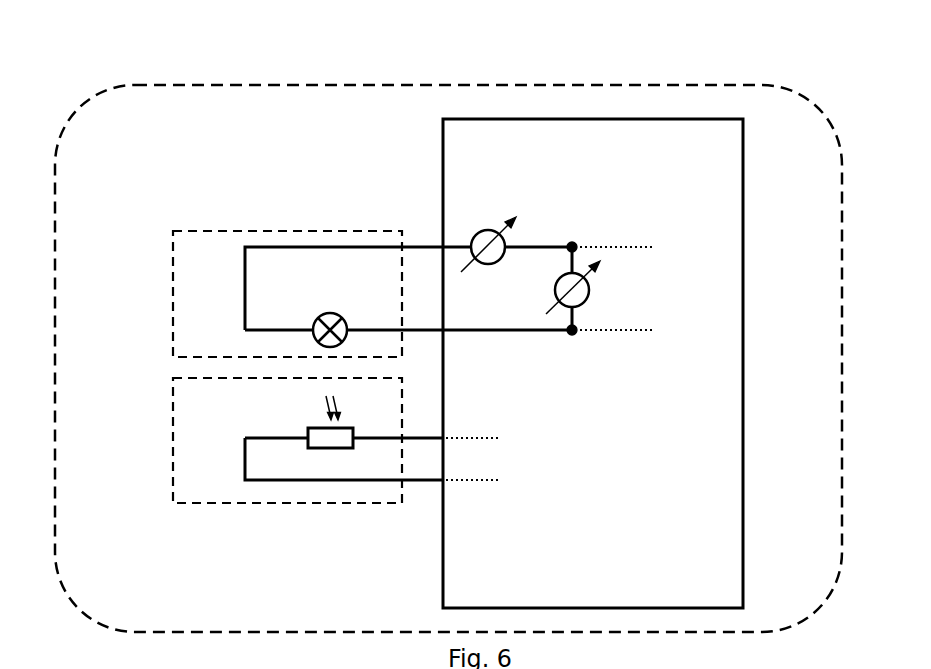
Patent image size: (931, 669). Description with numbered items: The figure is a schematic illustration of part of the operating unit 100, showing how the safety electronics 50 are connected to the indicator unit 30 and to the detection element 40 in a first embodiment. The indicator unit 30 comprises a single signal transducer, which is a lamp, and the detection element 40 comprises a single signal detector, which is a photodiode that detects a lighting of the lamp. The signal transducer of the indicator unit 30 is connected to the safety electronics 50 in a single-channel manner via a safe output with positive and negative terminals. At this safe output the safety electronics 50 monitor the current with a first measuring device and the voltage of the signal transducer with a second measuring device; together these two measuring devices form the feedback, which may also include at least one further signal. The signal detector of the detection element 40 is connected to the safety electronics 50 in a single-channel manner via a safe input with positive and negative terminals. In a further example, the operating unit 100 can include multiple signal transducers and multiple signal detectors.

The operating unit 100 is at (90, 91).
The indicator unit 30 is at (165, 280).
The detection element 40 is at (165, 427).
The safety electronics 50 is at (593, 363).